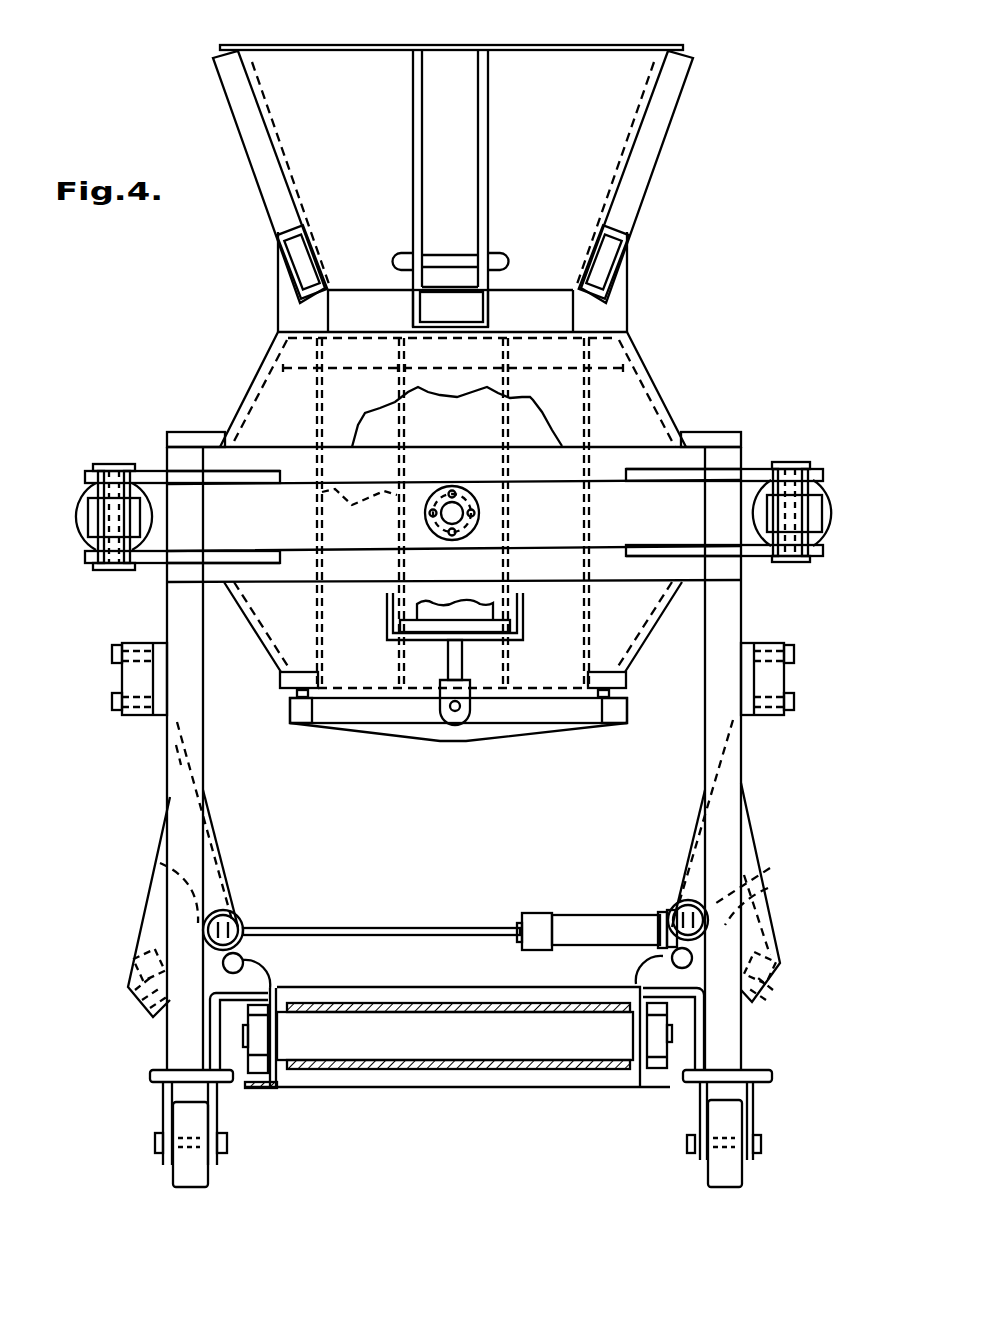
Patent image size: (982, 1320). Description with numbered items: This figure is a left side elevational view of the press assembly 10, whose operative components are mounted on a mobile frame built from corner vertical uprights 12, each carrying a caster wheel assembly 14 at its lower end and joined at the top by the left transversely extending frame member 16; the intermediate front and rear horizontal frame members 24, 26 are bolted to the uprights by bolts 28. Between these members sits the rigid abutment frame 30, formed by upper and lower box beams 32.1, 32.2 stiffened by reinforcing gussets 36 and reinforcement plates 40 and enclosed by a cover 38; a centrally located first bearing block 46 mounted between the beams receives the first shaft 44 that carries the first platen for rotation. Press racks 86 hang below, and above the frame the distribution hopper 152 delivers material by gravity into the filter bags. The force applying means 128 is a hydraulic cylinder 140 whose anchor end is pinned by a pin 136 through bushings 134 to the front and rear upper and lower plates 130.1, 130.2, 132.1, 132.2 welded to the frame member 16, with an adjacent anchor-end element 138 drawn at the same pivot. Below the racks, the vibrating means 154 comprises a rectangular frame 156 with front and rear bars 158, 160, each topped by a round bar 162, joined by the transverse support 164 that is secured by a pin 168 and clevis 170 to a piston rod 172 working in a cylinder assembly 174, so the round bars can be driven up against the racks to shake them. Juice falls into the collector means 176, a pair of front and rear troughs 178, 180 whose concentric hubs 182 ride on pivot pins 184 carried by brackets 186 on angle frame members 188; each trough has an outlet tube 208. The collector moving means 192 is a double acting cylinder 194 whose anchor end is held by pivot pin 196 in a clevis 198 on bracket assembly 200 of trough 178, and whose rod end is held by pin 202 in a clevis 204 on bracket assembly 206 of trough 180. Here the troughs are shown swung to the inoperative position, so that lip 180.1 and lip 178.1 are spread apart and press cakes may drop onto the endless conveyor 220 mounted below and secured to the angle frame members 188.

The press assembly 10 is at (768, 110).
The vertical uprights 12 is at (185, 1022).
The caster wheel assembly 14 is at (166, 1172).
The left transversely extending frame member 16 is at (254, 527).
The intermediate front horizontal frame member 24 is at (784, 680).
The intermediate rear horizontal frame member 26 is at (122, 680).
The bolts 28 is at (112, 652).
The abutment frame 30 is at (240, 374).
The upper box beam 32.1 is at (616, 482).
The lower box beam 32.2 is at (606, 542).
The reinforcing gussets 36 is at (492, 418).
The cover 38 is at (268, 368).
The reinforcement plates 40 is at (359, 510).
The first shaft 44 is at (480, 506).
The first bearing block 46 is at (470, 518).
The press racks 86 is at (288, 682).
The force applying means 128 is at (93, 446).
The front upper plate 130.1 is at (746, 468).
The front lower plate 130.2 is at (752, 557).
The rear upper plate 132.1 is at (150, 471).
The rear lower plate 132.2 is at (148, 563).
The bushing 134 is at (95, 474).
The pin 136 is at (118, 463).
The pivot bearing 138 is at (93, 512).
The cylinder 140 is at (90, 530).
The distribution hopper 152 is at (590, 44).
The vibrating means 154 is at (276, 238).
The rectangular frame 156 is at (520, 726).
The front bar 158 is at (615, 725).
The rear bar 160 is at (288, 725).
The round bar 162 is at (296, 694).
The left transversely extending support 164 is at (348, 722).
The pin 168 is at (452, 724).
The clevis 170 is at (470, 722).
The piston rod 172 is at (402, 660).
The cylinder assembly 174 is at (440, 590).
The collector means 176 is at (133, 890).
The front trough 178 is at (772, 888).
The lip of trough 178 178.1 is at (742, 735).
The rear trough 180 is at (150, 920).
The lip of trough 180 180.1 is at (172, 727).
The concentric hubs 182 is at (245, 958).
The pivot pins 184 is at (260, 930).
The brackets 186 is at (275, 985).
The angle frame members 188 is at (215, 1040).
The collector moving means 192 is at (548, 903).
The cylinder 194 is at (632, 913).
The pivot pin 196 is at (770, 868).
The clevis 198 is at (775, 902).
The bracket assembly 200 is at (772, 934).
The pin 202 is at (240, 910).
The clevis 204 is at (160, 863).
The bracket assembly 206 is at (138, 960).
The outlet tube 208 is at (243, 925).
The endless conveyor 220 is at (408, 1088).